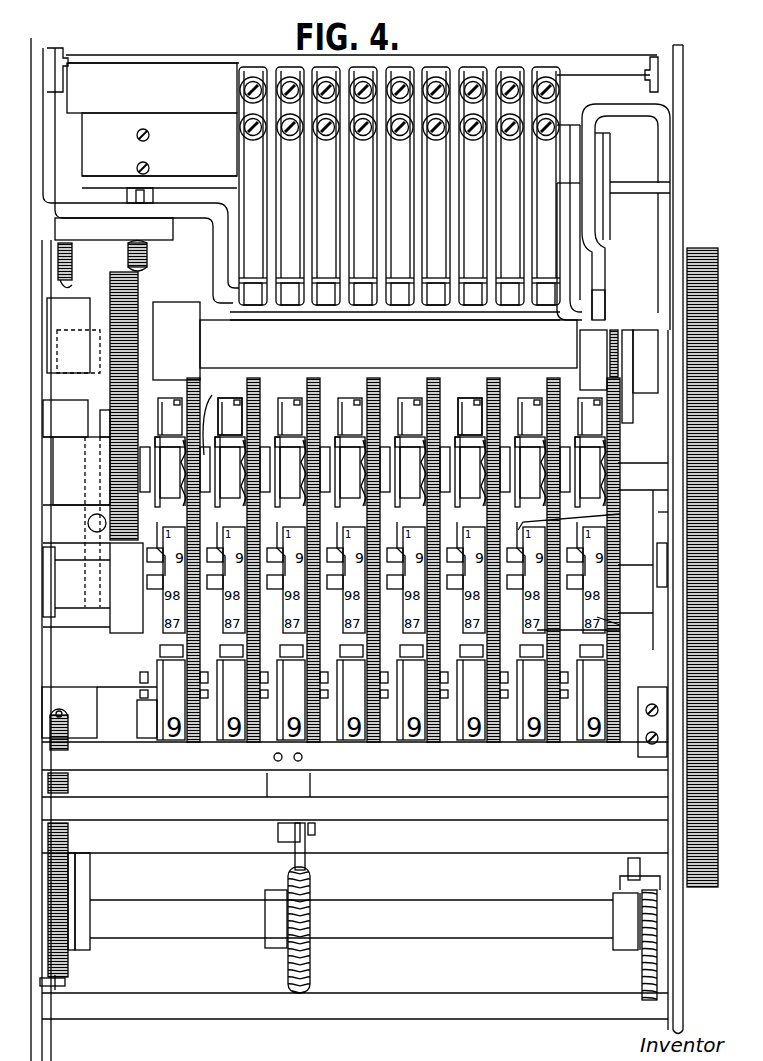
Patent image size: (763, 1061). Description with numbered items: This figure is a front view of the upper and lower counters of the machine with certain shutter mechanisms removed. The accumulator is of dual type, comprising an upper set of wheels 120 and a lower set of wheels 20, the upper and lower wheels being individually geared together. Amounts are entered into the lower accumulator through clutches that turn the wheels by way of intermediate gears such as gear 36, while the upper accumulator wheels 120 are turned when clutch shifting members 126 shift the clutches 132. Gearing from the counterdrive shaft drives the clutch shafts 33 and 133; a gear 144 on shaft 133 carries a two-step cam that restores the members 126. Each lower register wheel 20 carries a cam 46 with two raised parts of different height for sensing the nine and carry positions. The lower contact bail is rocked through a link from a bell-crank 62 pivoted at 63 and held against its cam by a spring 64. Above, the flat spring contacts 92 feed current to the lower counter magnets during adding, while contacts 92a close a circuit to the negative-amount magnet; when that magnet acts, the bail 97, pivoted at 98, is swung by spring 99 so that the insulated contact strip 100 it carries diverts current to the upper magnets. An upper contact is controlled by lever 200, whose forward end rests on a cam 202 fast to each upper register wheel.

The pivot 98 is at (68, 55).
The contacts 92a is at (250, 155).
The flat spring contacts 92 is at (507, 155).
The bail 97 is at (173, 232).
The spring 99 is at (146, 262).
The insulated contact strip 100 is at (348, 315).
The clutch 132 is at (222, 415).
The clutch shifting member 126 is at (291, 445).
The clutch shaft 133 is at (636, 476).
The gear 144 is at (110, 490).
The lever 200 is at (593, 518).
The clutch shaft 33 is at (645, 578).
The upper accumulator wheels 120 is at (166, 642).
The cam 202 is at (595, 631).
The intermediate gear 36 is at (200, 742).
The cam 46 is at (332, 742).
The lower accumulator wheels 20 is at (530, 740).
The bell-crank 62 is at (628, 864).
The pivot 63 is at (497, 905).
The spring 64 is at (642, 972).